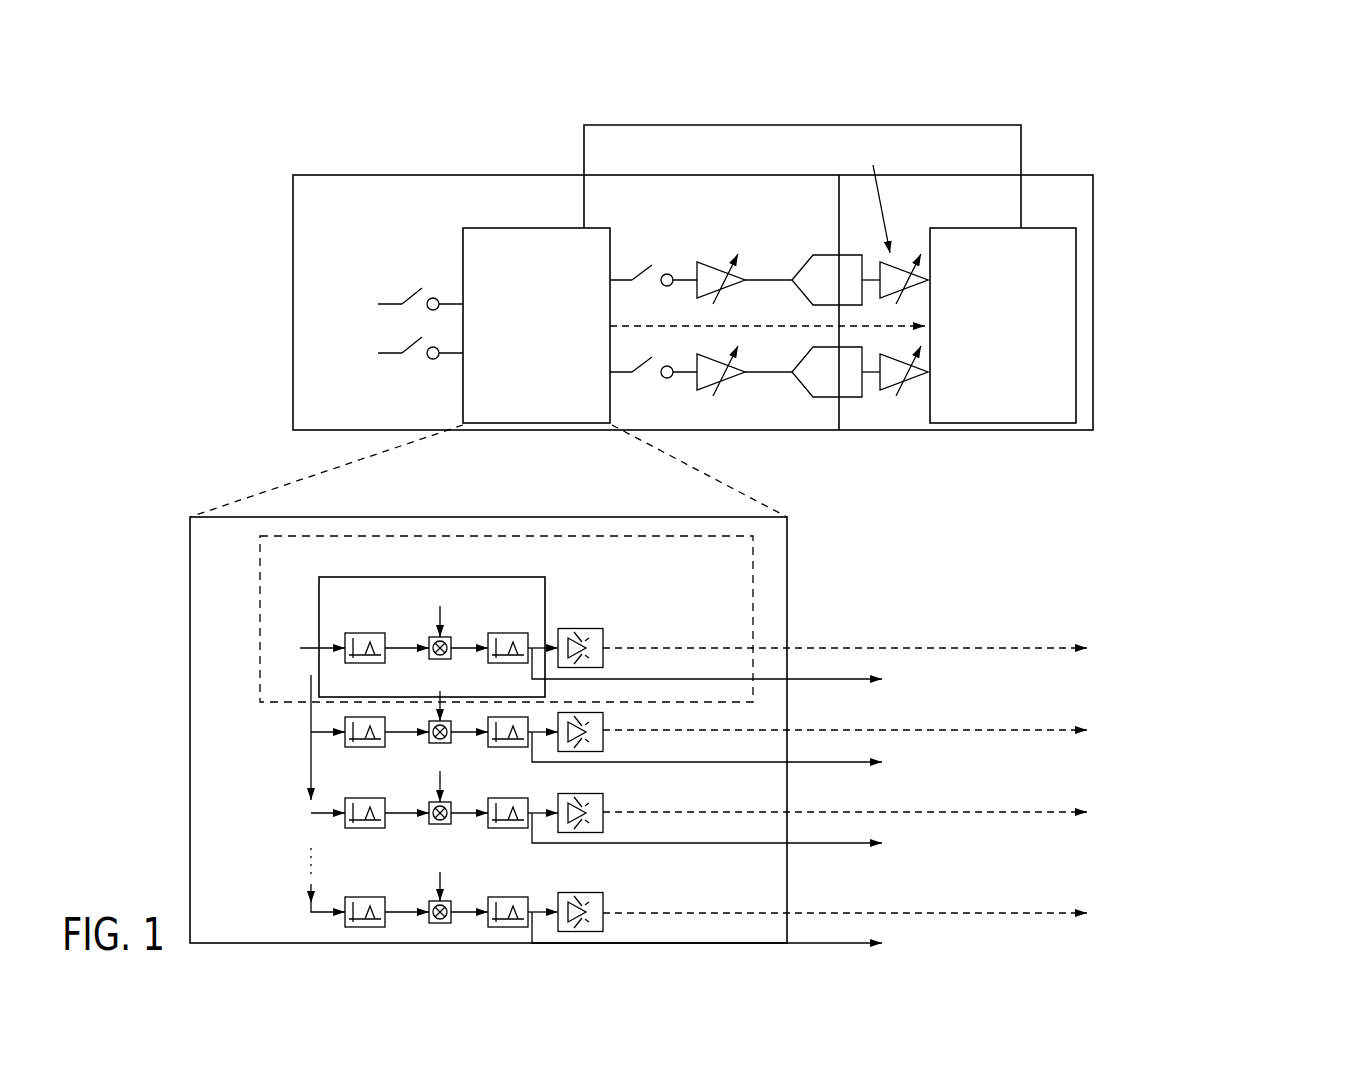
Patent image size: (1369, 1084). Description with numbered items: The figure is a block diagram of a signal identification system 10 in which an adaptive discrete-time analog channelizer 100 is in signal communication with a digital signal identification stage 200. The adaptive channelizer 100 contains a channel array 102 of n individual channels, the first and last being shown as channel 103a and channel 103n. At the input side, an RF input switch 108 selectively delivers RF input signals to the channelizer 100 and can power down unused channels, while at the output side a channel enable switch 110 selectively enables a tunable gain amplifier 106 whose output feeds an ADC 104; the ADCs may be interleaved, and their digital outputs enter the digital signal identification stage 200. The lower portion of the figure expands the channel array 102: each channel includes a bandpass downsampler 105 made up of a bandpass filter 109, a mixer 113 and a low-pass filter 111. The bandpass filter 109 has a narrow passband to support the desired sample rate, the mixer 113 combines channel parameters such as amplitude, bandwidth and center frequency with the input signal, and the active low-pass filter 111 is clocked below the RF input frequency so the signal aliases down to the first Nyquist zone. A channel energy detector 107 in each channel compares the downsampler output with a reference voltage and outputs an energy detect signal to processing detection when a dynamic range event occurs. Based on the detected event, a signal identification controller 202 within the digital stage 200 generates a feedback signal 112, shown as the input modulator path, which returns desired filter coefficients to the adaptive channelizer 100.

The signal identification system 10 is at (277, 140).
The adaptive channelizer 100 is at (472, 168).
The channel array 102 is at (462, 258).
The channel 103a is at (257, 635).
The channel 103n is at (298, 895).
The ADC 104 is at (797, 255).
The bandpass downsampler 105 is at (555, 582).
The tunable gain amplifier 106 is at (698, 253).
The channel energy detector 107 is at (580, 623).
The RF input switch 108 is at (408, 283).
The bandpass filter 109 is at (345, 623).
The channel enable switch 110 is at (622, 277).
The low-pass filter 111 is at (507, 622).
The feedback signal 112 is at (690, 123).
The mixer 113 is at (410, 614).
The digital signal identification stage 200 is at (1045, 170).
The signal identification controller 202 is at (1067, 225).